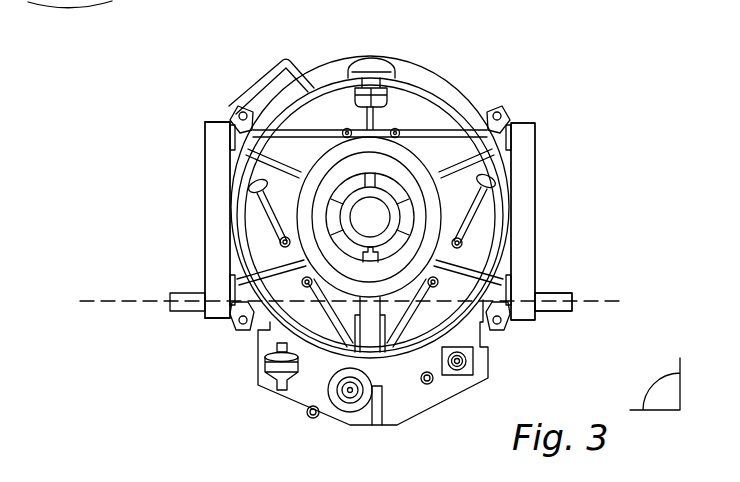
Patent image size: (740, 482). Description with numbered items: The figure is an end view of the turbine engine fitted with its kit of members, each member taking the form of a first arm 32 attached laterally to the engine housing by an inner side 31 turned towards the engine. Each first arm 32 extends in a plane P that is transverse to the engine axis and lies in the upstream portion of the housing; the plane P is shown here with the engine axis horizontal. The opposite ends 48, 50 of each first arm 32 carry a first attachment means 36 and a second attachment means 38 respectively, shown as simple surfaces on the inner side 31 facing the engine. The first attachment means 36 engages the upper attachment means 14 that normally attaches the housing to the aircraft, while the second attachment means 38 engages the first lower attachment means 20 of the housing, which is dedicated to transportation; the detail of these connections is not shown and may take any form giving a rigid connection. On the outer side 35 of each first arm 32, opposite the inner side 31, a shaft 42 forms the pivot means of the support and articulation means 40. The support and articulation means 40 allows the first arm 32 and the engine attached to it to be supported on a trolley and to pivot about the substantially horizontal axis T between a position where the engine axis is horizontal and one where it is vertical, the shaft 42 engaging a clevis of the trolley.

The upper attachment means 14 is at (276, 107).
The first lower attachment means 20 is at (233, 327).
The inner side 31 is at (262, 194).
The first arm 32 is at (205, 181).
The outer side 35 is at (207, 244).
The first attachment means 36 is at (207, 122).
The second attachment means 38 is at (229, 323).
The support and articulation means 40 is at (197, 292).
The shaft 42 is at (560, 311).
The end of first arm 48 is at (205, 122).
The end of first arm 50 is at (215, 322).
The horizontal axis T is at (107, 300).
The transverse plane P is at (655, 384).